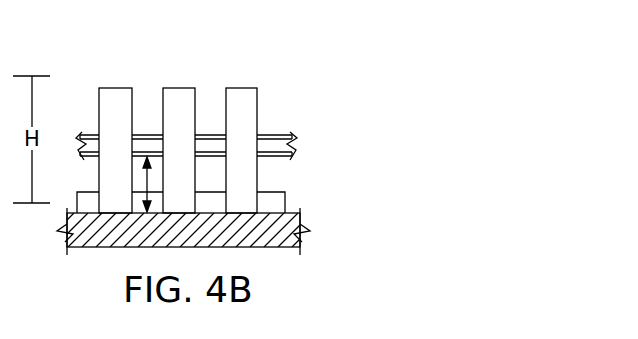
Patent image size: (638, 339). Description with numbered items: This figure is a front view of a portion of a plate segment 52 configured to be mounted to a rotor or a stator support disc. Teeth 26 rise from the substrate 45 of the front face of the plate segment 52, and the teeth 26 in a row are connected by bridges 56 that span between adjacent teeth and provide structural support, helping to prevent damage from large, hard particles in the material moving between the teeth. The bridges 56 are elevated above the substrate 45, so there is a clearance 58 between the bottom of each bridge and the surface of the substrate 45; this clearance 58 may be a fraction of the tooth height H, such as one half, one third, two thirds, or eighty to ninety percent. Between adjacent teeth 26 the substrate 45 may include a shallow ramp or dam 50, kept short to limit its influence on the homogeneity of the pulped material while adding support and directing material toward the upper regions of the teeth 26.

The teeth 26 is at (240, 88).
The bridges 56 is at (273, 135).
The ramp or dam 50 is at (287, 200).
The plate segment 52 is at (300, 219).
The clearance 58 is at (147, 190).
The substrate 45 is at (283, 248).